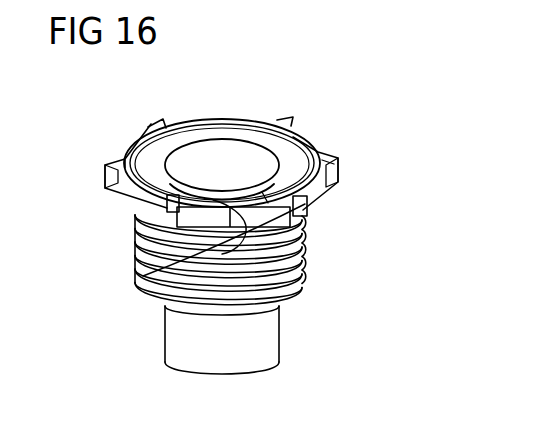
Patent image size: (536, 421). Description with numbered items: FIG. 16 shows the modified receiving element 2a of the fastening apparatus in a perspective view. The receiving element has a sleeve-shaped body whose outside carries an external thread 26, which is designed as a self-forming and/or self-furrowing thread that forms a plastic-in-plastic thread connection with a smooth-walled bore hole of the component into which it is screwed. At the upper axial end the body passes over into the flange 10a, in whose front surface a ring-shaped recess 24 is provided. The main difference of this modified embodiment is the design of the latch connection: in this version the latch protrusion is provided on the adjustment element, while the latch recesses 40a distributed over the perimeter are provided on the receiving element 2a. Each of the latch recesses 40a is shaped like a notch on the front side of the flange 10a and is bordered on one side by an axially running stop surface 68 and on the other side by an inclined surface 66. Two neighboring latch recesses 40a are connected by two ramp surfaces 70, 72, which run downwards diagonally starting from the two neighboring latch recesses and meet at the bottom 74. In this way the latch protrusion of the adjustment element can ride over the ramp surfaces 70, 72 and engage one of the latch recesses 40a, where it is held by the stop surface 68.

The receiving element 2a is at (136, 335).
The flange 10a is at (122, 188).
The latch recesses 40a is at (156, 125).
The ring-shaped recess 24 is at (288, 152).
The ramp surface 70 is at (213, 200).
The ramp surface 72 is at (266, 200).
The stop surface 68 is at (306, 201).
The inclined surface 66 is at (309, 228).
The external thread 26 is at (136, 245).
The bottom 74 is at (148, 271).